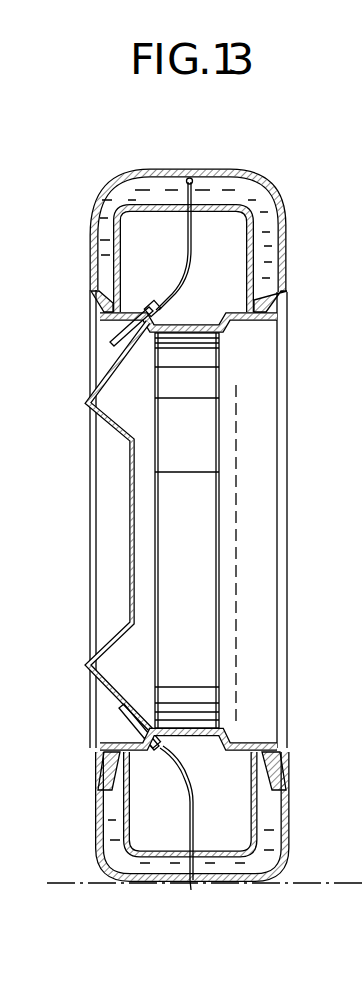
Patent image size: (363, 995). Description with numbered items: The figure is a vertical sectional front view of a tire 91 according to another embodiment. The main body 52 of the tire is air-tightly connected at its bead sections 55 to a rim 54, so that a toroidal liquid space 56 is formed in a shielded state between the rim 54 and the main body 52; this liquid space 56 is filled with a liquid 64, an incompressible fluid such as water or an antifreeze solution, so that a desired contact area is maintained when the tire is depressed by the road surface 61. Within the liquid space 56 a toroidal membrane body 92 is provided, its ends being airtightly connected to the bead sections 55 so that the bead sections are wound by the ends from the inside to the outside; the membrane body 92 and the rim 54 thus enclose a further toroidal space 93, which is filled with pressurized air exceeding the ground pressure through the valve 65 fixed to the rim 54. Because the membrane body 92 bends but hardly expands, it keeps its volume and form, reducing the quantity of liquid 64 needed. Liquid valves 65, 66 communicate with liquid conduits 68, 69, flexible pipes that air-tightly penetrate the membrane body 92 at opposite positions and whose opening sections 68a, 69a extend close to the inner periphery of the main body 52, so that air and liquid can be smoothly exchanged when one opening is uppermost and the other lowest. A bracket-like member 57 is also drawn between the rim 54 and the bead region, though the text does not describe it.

The tire 91 is at (97, 190).
The main body of the tire 52 is at (97, 217).
The liquid space 56 is at (132, 192).
The liquid 64 is at (266, 240).
The toroidal membrane body 92 is at (272, 212).
The toroidal liquid space 93 is at (143, 255).
The bead section 55 is at (103, 290).
The liquid conduit 68 is at (192, 245).
The opening section 68a is at (186, 180).
The liquid valve 65 is at (128, 328).
The rim 54 is at (229, 318).
The bracket 57 is at (120, 437).
The liquid valve 66 is at (120, 723).
The road surface 61 is at (287, 887).
The liquid conduit 69 is at (190, 800).
The opening section 69a is at (191, 890).